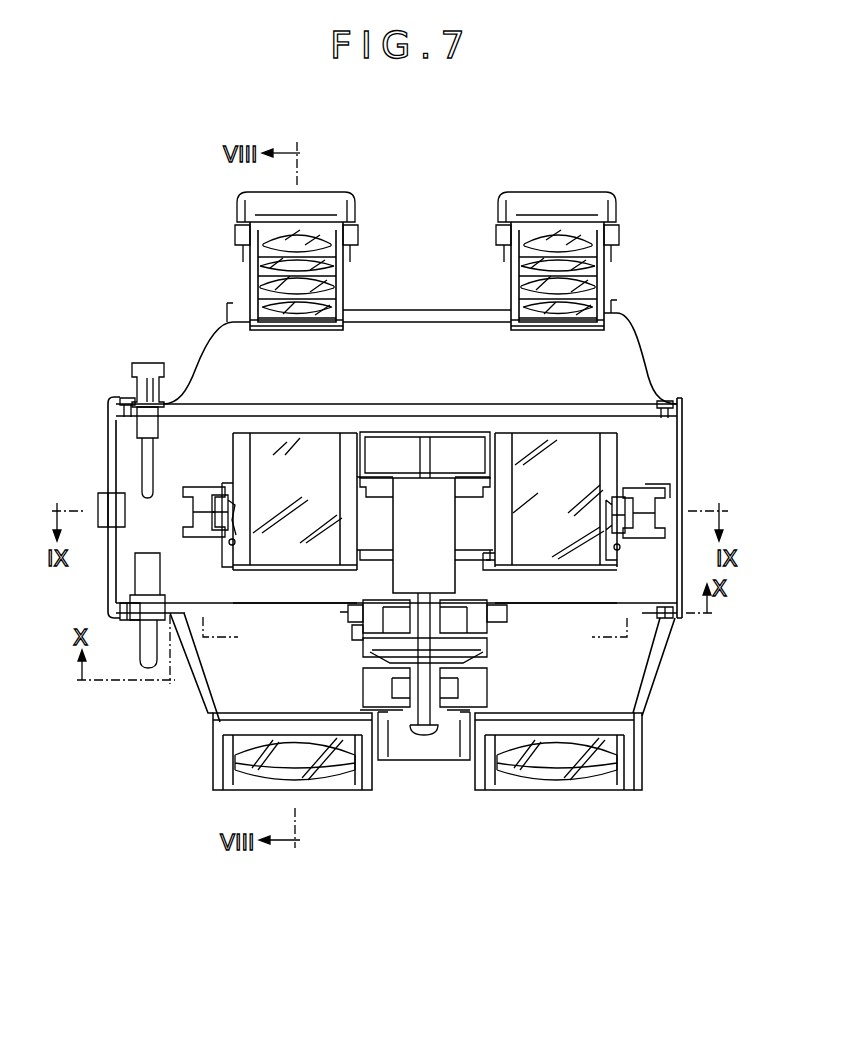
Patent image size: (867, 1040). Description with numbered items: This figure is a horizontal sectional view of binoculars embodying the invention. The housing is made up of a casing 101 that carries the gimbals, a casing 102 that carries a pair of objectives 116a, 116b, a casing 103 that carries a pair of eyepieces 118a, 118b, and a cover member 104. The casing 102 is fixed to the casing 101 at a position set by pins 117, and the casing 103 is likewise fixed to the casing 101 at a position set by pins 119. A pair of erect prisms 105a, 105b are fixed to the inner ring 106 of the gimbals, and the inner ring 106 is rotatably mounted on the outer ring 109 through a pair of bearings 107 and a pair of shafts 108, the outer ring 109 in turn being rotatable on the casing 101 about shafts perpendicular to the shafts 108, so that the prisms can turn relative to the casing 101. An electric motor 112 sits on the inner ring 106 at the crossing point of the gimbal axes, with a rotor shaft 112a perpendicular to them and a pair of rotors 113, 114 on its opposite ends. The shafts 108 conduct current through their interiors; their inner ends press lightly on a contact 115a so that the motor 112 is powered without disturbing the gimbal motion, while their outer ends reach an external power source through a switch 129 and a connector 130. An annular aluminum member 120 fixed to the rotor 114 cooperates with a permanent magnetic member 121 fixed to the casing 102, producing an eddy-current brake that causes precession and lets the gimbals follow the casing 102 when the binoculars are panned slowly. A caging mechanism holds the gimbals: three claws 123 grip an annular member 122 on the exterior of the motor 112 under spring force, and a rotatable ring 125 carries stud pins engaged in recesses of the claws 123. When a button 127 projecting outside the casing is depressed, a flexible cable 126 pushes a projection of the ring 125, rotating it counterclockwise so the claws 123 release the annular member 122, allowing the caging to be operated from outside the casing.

The casing 101 is at (596, 407).
The casing 102 is at (653, 685).
The casing 103 is at (638, 350).
The cover member 104 is at (680, 433).
The erect prism 105a is at (588, 491).
The erect prism 105b is at (318, 491).
The inner ring 106 is at (499, 565).
The bearing 107 is at (222, 535).
The shaft 108 is at (192, 515).
The outer ring 109 is at (662, 488).
The electric motor 112 is at (402, 488).
The rotor shaft 112a is at (421, 458).
The rotor 113 is at (455, 455).
The rotor 114 is at (480, 650).
The contact 115a is at (415, 590).
The objective 116a is at (558, 770).
The objective 116b is at (323, 773).
The pin 117 is at (128, 620).
The eyepiece 118a is at (565, 240).
The eyepiece 118b is at (305, 240).
The pin 119 is at (123, 397).
The annular aluminum member 120 is at (368, 664).
The permanent magnetic member 121 is at (382, 690).
The annular member 122 is at (350, 615).
The claw 123 is at (353, 630).
The ring 125 is at (507, 620).
The flexible cable 126 is at (155, 458).
The button 127 is at (142, 363).
The switch 129 is at (150, 655).
The connector 130 is at (98, 497).